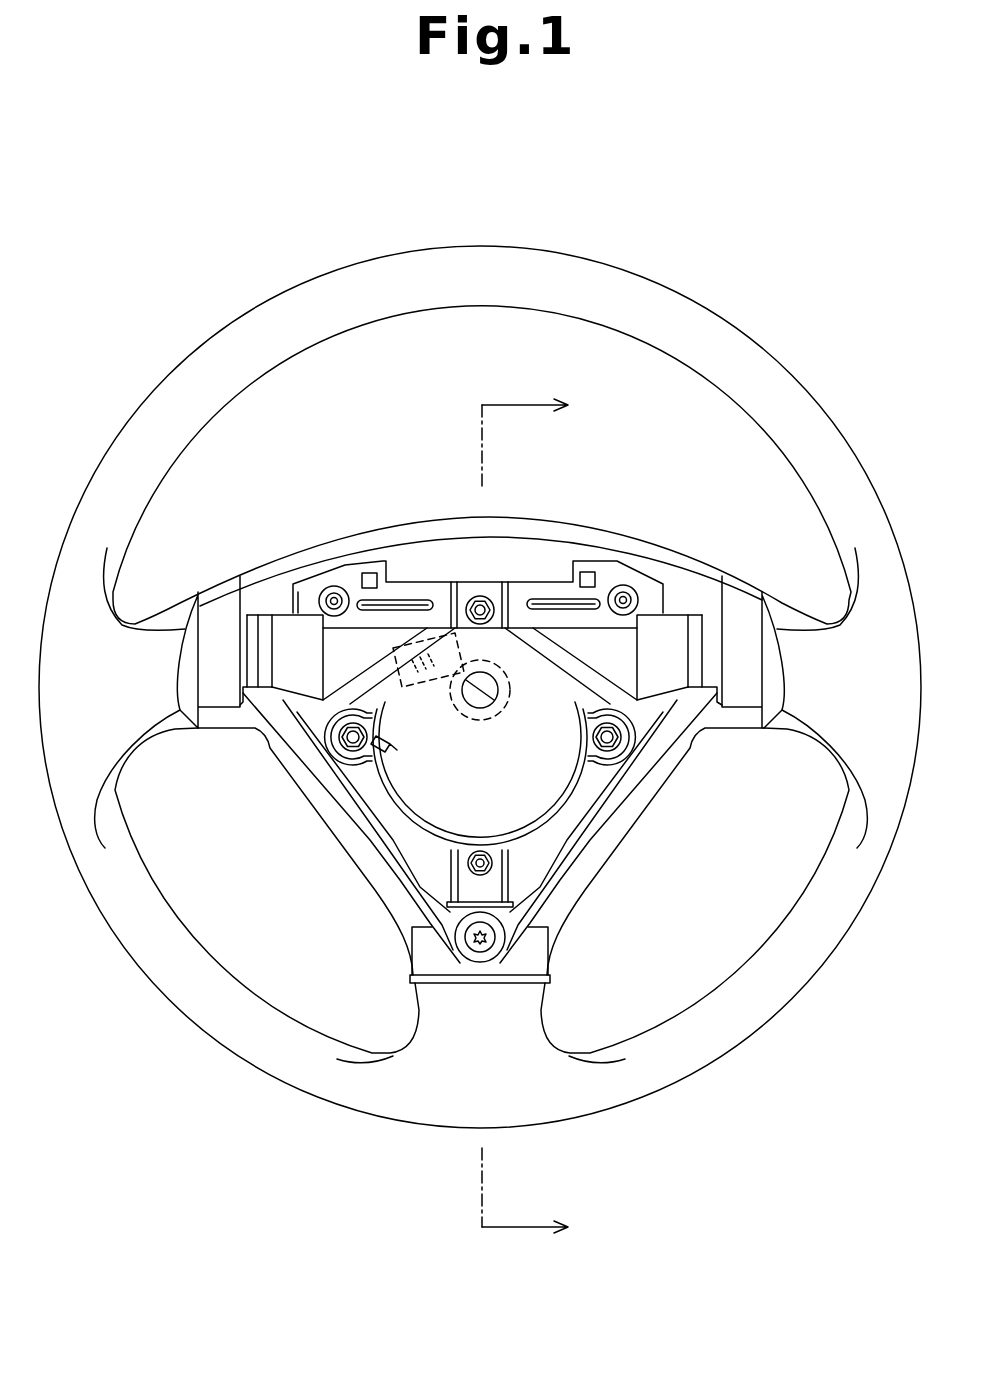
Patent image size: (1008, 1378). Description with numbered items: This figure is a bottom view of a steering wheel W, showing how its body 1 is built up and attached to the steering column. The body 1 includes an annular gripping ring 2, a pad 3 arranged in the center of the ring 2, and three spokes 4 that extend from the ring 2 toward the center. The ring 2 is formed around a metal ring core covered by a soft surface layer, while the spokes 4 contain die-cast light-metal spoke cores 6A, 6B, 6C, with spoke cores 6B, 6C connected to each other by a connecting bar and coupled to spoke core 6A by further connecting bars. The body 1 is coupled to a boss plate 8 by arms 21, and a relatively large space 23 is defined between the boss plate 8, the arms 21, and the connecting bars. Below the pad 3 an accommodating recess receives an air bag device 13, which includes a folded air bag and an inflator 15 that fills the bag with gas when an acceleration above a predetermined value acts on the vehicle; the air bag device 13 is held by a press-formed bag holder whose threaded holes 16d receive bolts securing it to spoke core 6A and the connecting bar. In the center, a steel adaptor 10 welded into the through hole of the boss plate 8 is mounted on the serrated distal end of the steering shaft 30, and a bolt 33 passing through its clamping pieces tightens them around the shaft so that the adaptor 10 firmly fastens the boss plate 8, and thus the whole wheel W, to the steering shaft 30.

The steering wheel W is at (716, 256).
The body 1 is at (782, 345).
The gripping ring 2 is at (823, 403).
The pad 3 is at (330, 833).
The spokes 4 is at (157, 743).
The spoke core 6A is at (547, 933).
The spoke core 6B is at (737, 637).
The spoke core 6C is at (218, 627).
The boss plate 8 is at (618, 655).
The adaptor 10 is at (523, 735).
The air bag device 13 is at (620, 790).
The inflator 15 is at (387, 867).
The threaded holes 16d is at (337, 587).
The arms 21 is at (263, 623).
The space 23 is at (482, 902).
The steering shaft 30 is at (468, 722).
The bolt 33 is at (397, 750).